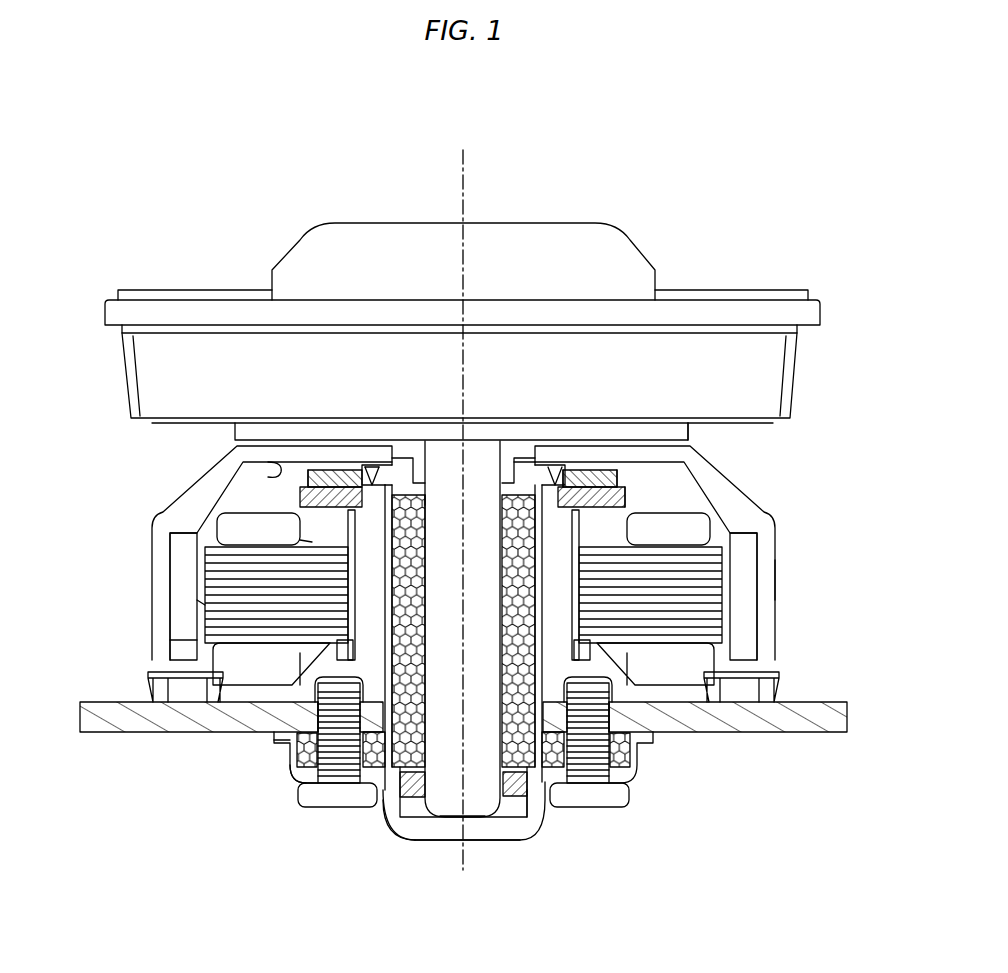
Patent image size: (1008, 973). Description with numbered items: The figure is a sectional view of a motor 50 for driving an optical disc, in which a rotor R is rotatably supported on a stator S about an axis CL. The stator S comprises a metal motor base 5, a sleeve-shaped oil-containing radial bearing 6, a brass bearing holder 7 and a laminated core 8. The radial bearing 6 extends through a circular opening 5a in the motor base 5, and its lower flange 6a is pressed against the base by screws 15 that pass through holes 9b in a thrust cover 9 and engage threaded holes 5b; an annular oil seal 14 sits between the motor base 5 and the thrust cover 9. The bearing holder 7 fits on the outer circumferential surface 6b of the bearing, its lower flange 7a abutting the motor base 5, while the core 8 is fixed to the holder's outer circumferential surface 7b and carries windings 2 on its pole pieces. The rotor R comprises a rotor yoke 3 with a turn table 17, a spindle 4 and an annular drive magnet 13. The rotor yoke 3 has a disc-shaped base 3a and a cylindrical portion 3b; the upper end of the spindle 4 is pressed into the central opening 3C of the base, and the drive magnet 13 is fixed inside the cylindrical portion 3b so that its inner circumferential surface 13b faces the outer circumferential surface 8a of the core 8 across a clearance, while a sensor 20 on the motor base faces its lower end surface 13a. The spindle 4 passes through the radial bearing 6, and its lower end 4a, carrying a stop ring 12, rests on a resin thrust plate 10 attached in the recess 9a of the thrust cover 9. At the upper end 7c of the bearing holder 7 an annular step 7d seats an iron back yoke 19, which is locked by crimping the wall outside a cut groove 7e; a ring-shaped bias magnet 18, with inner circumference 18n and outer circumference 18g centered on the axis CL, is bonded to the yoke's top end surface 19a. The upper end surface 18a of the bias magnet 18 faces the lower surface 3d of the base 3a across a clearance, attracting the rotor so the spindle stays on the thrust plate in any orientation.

The windings 2 is at (230, 528).
The rotor yoke 3 is at (770, 605).
The base 3a is at (690, 425).
The cylindrical portion 3b is at (770, 568).
The central opening 3C is at (513, 458).
The lower surface 3d is at (275, 468).
The spindle 4 is at (483, 453).
The lower end 4a is at (475, 818).
The motor base 5 is at (805, 722).
The circular opening 5a is at (600, 740).
The threaded holes 5b is at (292, 718).
The radial bearing 6 is at (556, 764).
The flange 6a is at (300, 764).
The outer circumferential surface 6b is at (543, 590).
The bearing holder 7 is at (647, 742).
The flange 7a is at (613, 676).
The outer circumferential surface 7b is at (580, 614).
The upper end 7c is at (387, 472).
The annular step 7d is at (428, 500).
The cut groove 7e is at (371, 470).
The core 8 is at (215, 618).
The outer circumferential surface 8a is at (310, 540).
The thrust cover 9 is at (390, 822).
The recess 9a is at (524, 820).
The holes 9b is at (300, 775).
The thrust plate 10 is at (425, 822).
The stop ring 12 is at (511, 792).
The drive magnet 13 is at (180, 577).
The lower end surface 13a is at (175, 640).
The inner circumferential surface 13b is at (217, 605).
The oil seal 14 is at (270, 742).
The screws 15 is at (317, 802).
The turn table 17 is at (347, 243).
The bias magnet 18 is at (590, 472).
The upper end surface 18a is at (320, 477).
The outer circumference 18g is at (607, 470).
The inner circumference 18n is at (562, 475).
The back yoke 19 is at (625, 482).
The top end surface 19a is at (625, 495).
The sensor 20 is at (150, 690).
The motor 50 is at (634, 164).
The rotor R is at (762, 208).
The stator S is at (728, 853).
The axis CL is at (463, 168).